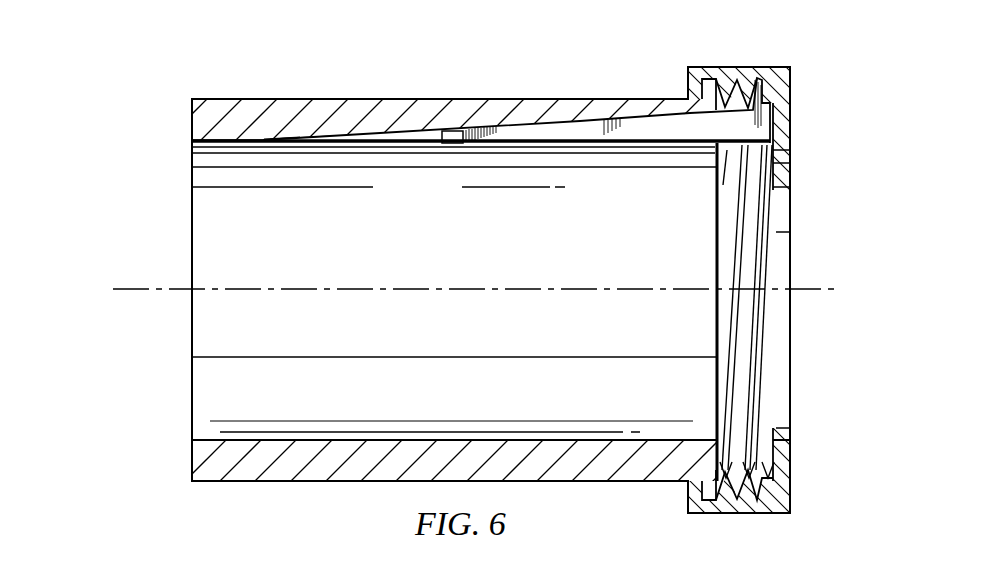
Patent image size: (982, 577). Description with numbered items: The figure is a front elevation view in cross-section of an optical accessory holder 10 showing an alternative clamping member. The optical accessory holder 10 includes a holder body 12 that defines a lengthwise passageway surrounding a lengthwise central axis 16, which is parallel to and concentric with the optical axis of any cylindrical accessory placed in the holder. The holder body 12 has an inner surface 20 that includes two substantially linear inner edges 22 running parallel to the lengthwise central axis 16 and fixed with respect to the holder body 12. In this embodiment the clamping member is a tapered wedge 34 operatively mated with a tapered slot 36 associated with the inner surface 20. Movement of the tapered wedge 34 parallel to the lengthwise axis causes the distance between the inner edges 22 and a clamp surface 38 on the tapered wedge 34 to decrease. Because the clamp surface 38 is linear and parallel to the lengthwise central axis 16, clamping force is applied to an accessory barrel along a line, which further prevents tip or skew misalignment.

The optical accessory holder 10 is at (523, 287).
The holder body 12 is at (277, 472).
The lengthwise central axis 16 is at (137, 292).
The inner surface 20 is at (210, 434).
The inner edges 22 is at (308, 357).
The tapered wedge 34 is at (637, 128).
The tapered slot 36 is at (445, 145).
The clamp surface 38 is at (606, 148).